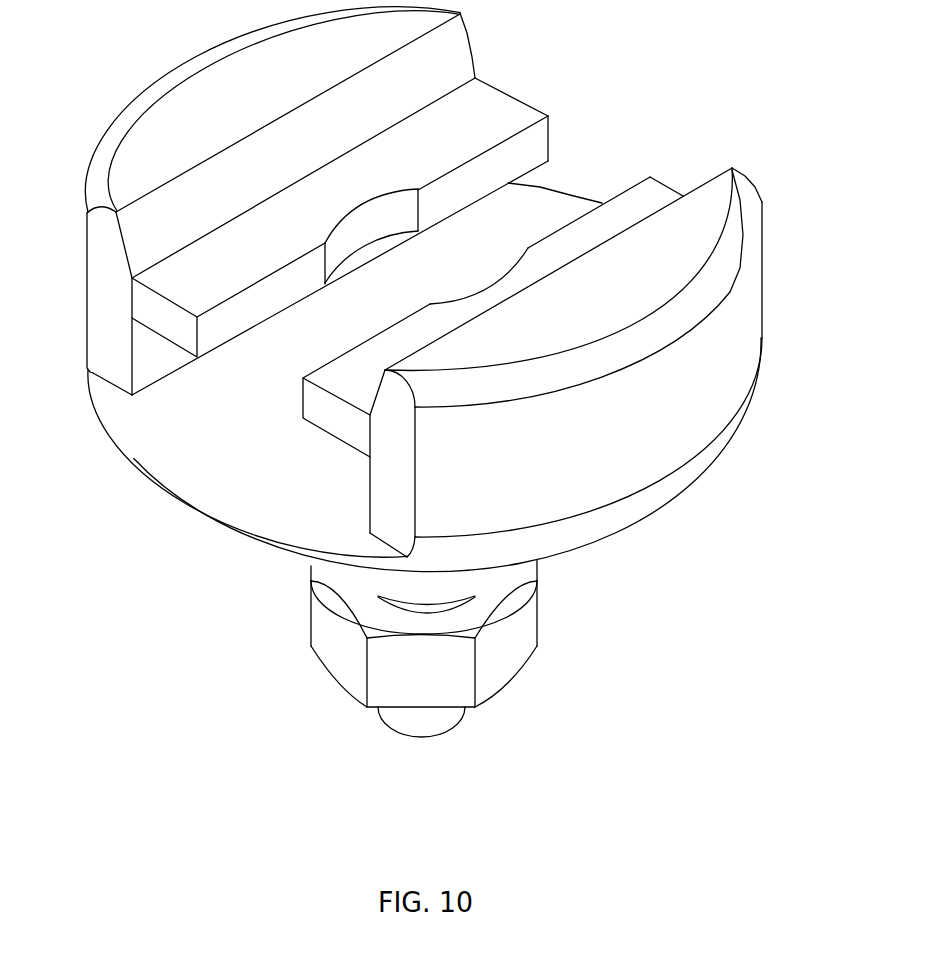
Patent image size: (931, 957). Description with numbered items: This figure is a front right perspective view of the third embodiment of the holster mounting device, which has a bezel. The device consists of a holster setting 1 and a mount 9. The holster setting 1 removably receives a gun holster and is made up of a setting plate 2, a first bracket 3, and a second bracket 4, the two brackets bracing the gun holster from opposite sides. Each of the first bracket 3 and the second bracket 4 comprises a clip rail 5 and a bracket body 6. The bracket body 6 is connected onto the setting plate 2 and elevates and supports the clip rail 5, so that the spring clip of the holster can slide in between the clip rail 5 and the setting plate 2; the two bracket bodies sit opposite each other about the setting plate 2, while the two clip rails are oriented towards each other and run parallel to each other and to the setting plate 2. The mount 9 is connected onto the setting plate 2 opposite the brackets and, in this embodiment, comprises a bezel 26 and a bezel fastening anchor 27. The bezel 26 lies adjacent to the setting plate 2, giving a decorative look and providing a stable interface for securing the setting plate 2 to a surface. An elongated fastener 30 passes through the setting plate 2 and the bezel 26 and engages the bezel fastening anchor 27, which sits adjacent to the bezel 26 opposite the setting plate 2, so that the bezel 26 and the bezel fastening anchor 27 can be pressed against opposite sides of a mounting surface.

The holster setting 1 is at (426, 372).
The setting plate 2 is at (134, 457).
The first bracket 3 is at (124, 124).
The second bracket 4 is at (763, 338).
The clip rail 5 is at (542, 133).
The bracket body 6 is at (93, 323).
The mount 9 is at (435, 646).
The bezel 26 is at (307, 563).
The bezel fastening anchor 27 is at (520, 663).
The elongated fastener 30 is at (340, 336).